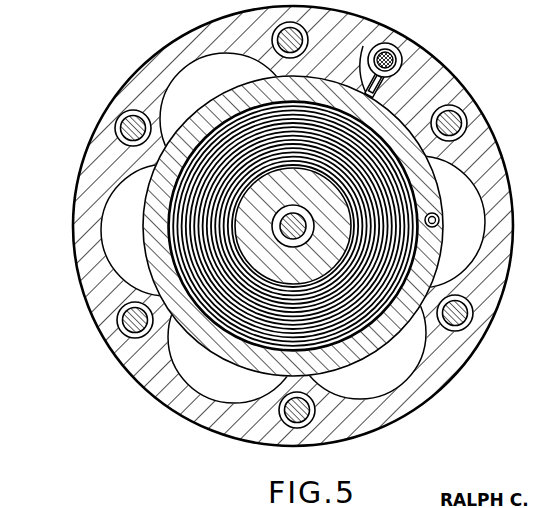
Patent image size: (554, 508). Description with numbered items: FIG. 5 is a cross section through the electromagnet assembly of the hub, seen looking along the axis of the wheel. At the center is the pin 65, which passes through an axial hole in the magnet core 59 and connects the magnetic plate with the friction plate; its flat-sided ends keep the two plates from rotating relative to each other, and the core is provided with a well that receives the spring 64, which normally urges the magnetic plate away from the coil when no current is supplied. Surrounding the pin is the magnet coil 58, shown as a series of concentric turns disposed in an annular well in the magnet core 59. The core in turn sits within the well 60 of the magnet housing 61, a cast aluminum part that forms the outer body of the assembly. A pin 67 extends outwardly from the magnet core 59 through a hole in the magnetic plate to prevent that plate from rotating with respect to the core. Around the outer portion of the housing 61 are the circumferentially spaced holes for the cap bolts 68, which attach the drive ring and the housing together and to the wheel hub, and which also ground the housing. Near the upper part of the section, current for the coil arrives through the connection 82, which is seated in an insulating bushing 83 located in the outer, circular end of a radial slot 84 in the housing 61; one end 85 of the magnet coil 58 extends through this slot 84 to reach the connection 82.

The magnet coil 58 is at (237, 330).
The magnet core 59 is at (368, 352).
The well 60 is at (216, 68).
The magnet housing 61 is at (501, 265).
The spring 64 is at (275, 232).
The pin 65 is at (291, 210).
The pin 67 is at (439, 217).
The cap bolts 68 is at (125, 118).
The connection 82 is at (389, 52).
The insulating bushing 83 is at (403, 57).
The radial slot 84 is at (388, 88).
The end of coil 85 is at (363, 46).